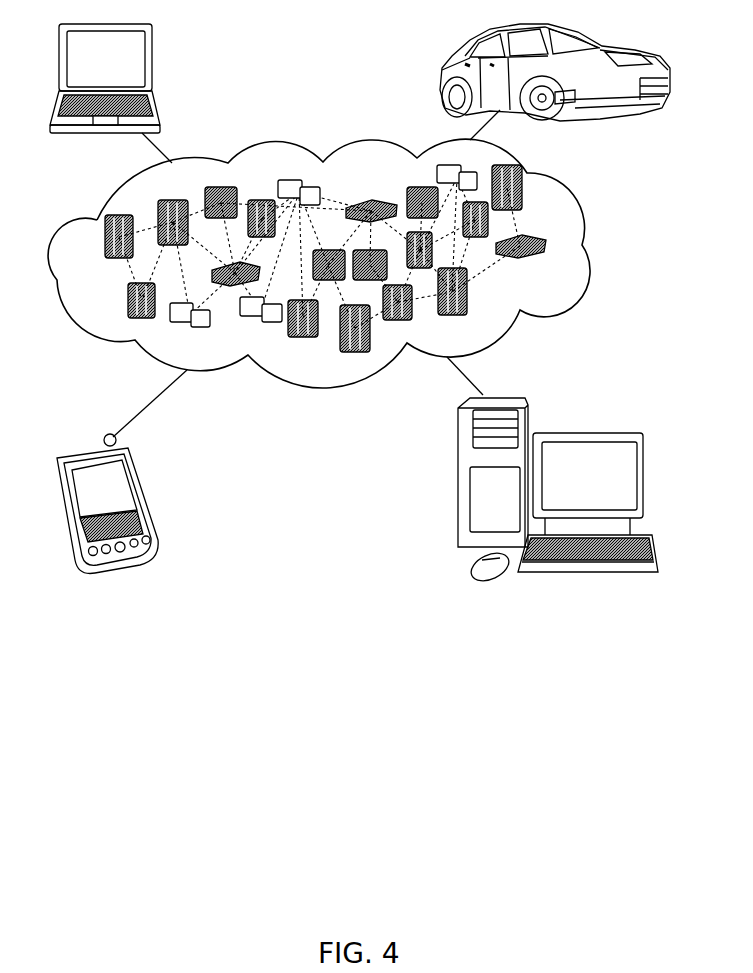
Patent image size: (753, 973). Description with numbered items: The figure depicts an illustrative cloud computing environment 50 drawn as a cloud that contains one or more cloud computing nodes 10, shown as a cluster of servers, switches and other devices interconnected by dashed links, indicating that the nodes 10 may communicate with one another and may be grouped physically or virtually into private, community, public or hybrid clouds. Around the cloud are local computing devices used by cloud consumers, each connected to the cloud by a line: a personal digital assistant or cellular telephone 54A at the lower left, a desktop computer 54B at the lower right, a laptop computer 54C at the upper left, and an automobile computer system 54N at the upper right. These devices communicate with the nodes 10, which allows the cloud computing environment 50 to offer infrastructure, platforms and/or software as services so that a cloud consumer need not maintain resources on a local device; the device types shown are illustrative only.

The cloud computing nodes 10 is at (552, 267).
The cloud computing environment 50 is at (583, 243).
The personal digital assistant or cellular telephone 54A is at (147, 497).
The desktop computer 54B is at (585, 433).
The laptop computer 54C is at (155, 63).
The automobile computer system 54N is at (438, 74).